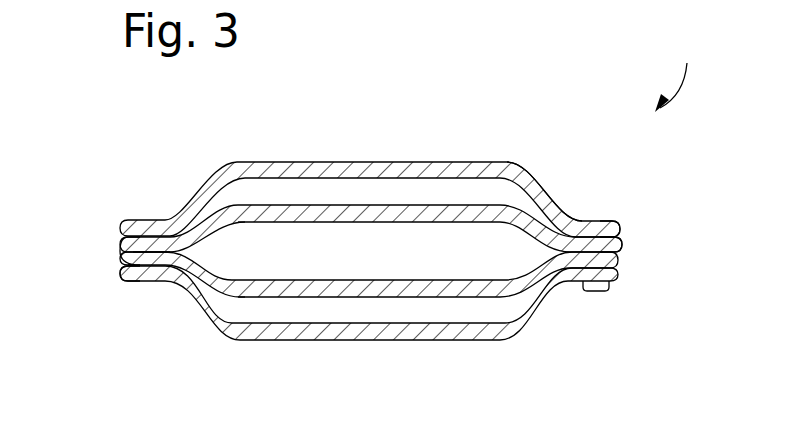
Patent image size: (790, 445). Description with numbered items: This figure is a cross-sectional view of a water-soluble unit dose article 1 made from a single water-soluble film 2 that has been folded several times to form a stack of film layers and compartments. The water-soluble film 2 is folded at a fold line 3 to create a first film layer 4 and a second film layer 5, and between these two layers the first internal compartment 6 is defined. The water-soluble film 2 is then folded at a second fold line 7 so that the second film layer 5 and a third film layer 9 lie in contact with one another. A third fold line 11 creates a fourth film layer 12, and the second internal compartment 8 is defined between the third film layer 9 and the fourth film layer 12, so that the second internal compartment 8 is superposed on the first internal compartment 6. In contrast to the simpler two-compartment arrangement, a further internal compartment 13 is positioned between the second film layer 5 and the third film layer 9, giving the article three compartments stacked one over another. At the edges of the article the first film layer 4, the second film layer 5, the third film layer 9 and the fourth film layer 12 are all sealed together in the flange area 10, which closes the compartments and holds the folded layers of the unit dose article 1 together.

The water-soluble unit dose article 1 is at (675, 73).
The water-soluble film 2 is at (122, 270).
The fold line 3 is at (613, 257).
The first film layer 4 is at (515, 325).
The second film layer 5 is at (418, 290).
The first internal compartment 6 is at (271, 312).
The second fold line 7 is at (122, 243).
The second internal compartment 8 is at (390, 188).
The third film layer 9 is at (532, 215).
The flange area 10 is at (597, 291).
The third fold line 11 is at (613, 230).
The fourth film layer 12 is at (513, 165).
The further internal compartment 13 is at (270, 238).